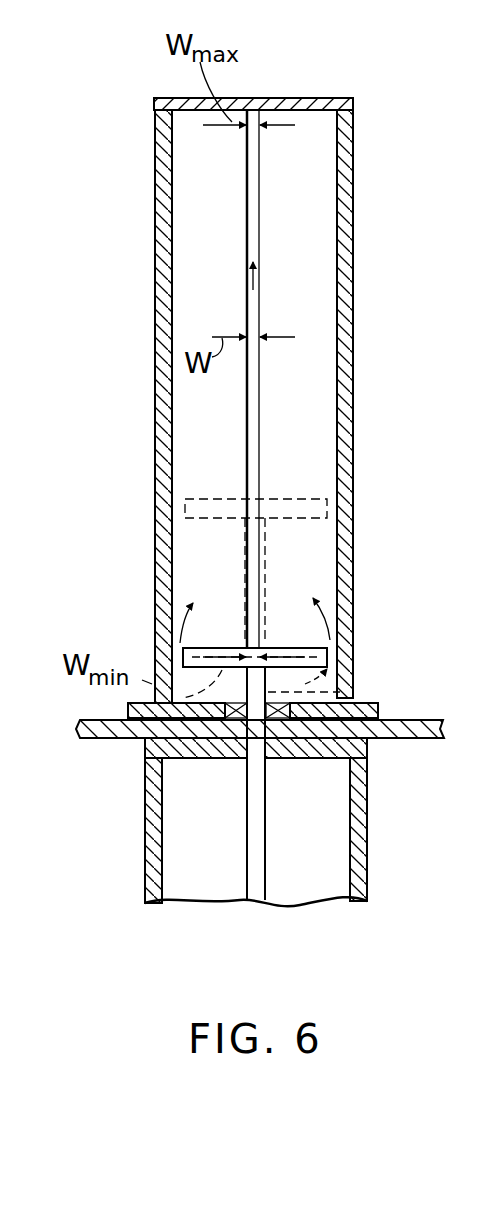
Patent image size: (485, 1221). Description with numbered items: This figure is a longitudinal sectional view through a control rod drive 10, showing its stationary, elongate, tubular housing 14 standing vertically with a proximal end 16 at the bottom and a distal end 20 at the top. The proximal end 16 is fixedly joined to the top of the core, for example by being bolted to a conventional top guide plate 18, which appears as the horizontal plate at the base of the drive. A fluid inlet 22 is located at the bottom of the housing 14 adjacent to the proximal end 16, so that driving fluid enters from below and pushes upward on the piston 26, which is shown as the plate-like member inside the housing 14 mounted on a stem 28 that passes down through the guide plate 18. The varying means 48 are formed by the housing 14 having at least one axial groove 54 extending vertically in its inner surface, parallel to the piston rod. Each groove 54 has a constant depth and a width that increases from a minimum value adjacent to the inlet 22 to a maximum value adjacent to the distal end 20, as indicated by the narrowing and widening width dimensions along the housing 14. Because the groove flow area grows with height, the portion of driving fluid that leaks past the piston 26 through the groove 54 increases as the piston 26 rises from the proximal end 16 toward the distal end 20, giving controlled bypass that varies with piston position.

The control rod drive 10 is at (150, 203).
The housing 14 is at (351, 222).
The proximal end 16 is at (376, 700).
The top guide plate 18 is at (79, 716).
The distal end 20 is at (300, 98).
The fluid inlet 22 is at (352, 697).
The piston 26 is at (283, 645).
The stem 28 is at (246, 812).
The varying means 48 is at (246, 210).
The axial groove 54 is at (260, 197).